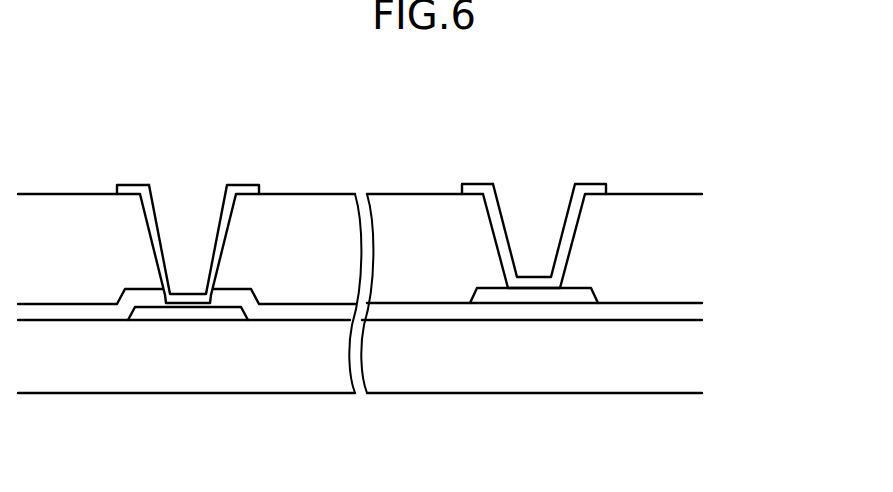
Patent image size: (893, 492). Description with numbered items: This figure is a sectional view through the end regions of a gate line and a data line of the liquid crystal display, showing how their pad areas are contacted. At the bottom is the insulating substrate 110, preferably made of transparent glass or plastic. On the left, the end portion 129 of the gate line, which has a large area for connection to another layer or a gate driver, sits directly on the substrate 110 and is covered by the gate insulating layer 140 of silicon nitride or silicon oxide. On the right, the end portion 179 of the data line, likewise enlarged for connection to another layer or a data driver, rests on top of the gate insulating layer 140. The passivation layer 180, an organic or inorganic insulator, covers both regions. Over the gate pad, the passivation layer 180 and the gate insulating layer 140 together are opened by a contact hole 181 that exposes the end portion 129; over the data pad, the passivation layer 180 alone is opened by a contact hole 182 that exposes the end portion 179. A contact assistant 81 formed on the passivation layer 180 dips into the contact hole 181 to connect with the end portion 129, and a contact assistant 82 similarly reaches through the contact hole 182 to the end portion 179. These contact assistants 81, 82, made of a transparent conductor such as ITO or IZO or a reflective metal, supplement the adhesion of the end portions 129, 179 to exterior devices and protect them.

The passivation layer 180 is at (54, 212).
The contact assistant 81 is at (132, 183).
The contact hole 181 is at (155, 256).
The contact assistant 82 is at (484, 183).
The contact hole 182 is at (502, 257).
The gate insulating layer 140 is at (65, 313).
The end portion of gate line 129 is at (167, 313).
The insulating substrate 110 is at (240, 367).
The end portion of data line 179 is at (538, 300).